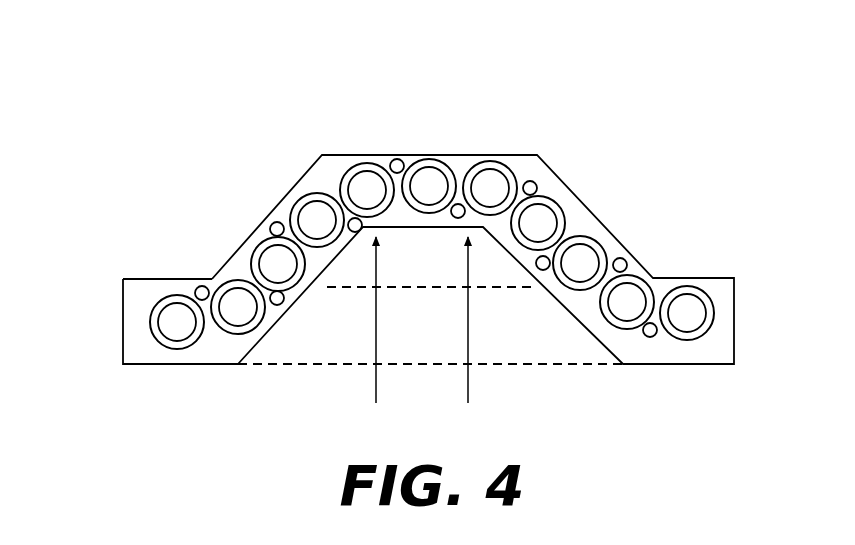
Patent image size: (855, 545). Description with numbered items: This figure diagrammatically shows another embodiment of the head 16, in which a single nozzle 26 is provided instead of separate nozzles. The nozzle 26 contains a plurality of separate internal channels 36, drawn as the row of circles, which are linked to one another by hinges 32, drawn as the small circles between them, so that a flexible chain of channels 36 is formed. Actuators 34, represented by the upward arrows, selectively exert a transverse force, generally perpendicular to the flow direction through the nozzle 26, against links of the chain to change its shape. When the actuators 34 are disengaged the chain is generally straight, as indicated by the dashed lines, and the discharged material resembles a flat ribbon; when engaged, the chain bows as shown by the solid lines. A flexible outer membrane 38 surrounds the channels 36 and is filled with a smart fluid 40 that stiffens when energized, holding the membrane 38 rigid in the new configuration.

The head 16 is at (115, 90).
The nozzle 26 is at (728, 313).
The hinge 32 is at (206, 286).
The actuator 34 is at (376, 320).
The channel 36 is at (169, 331).
The flexible outer membrane 38 is at (147, 286).
The smart fluid 40 is at (133, 322).